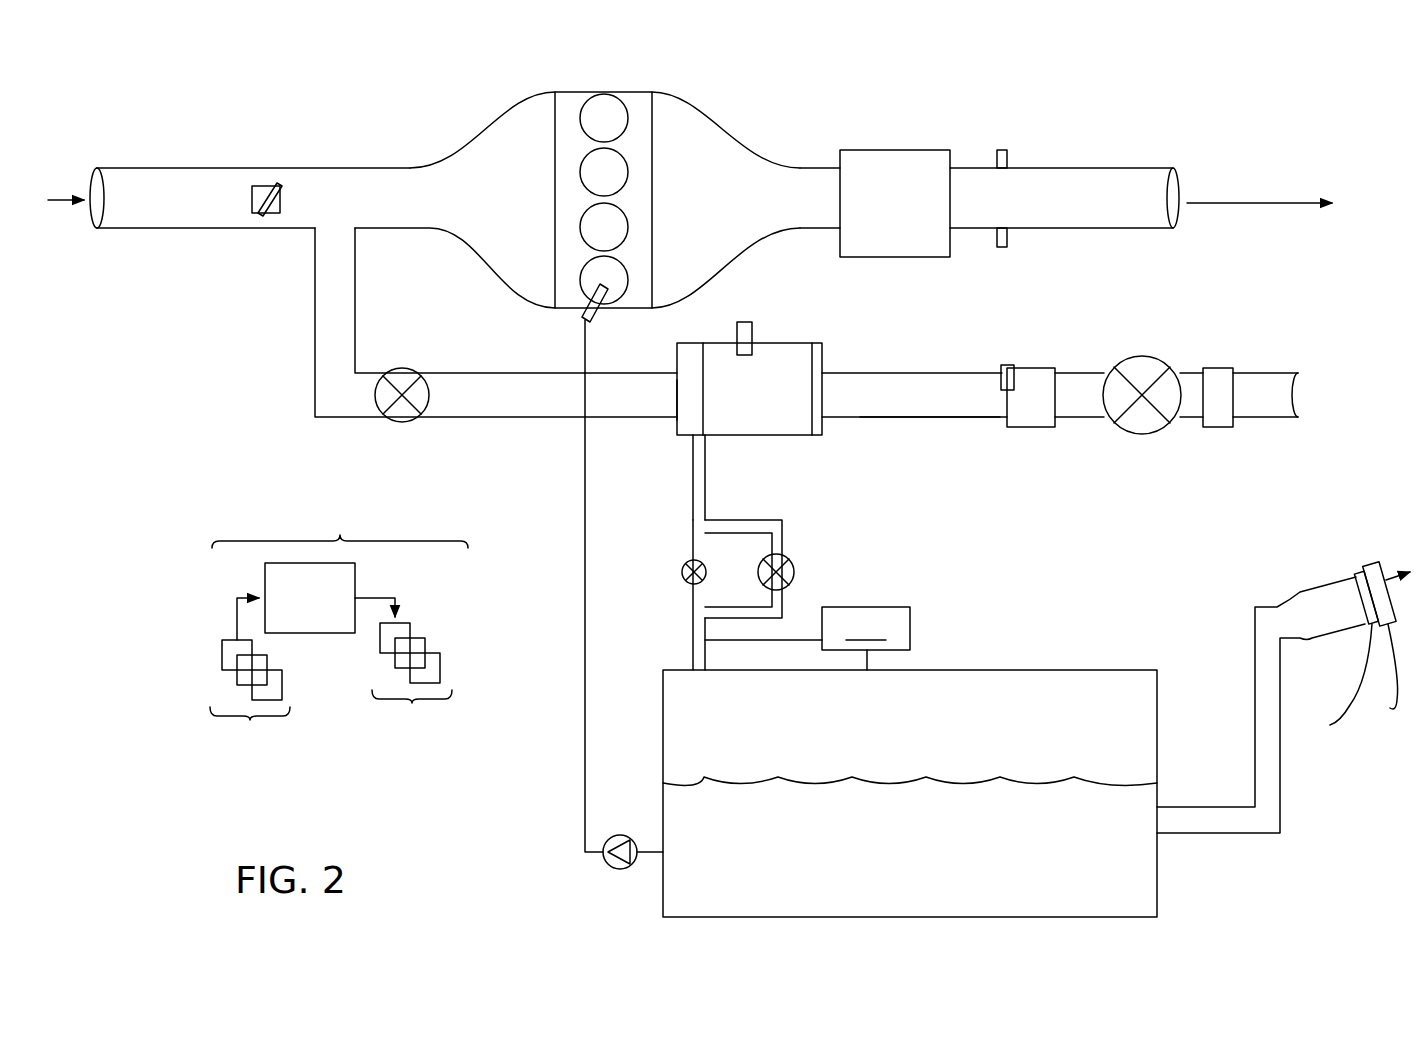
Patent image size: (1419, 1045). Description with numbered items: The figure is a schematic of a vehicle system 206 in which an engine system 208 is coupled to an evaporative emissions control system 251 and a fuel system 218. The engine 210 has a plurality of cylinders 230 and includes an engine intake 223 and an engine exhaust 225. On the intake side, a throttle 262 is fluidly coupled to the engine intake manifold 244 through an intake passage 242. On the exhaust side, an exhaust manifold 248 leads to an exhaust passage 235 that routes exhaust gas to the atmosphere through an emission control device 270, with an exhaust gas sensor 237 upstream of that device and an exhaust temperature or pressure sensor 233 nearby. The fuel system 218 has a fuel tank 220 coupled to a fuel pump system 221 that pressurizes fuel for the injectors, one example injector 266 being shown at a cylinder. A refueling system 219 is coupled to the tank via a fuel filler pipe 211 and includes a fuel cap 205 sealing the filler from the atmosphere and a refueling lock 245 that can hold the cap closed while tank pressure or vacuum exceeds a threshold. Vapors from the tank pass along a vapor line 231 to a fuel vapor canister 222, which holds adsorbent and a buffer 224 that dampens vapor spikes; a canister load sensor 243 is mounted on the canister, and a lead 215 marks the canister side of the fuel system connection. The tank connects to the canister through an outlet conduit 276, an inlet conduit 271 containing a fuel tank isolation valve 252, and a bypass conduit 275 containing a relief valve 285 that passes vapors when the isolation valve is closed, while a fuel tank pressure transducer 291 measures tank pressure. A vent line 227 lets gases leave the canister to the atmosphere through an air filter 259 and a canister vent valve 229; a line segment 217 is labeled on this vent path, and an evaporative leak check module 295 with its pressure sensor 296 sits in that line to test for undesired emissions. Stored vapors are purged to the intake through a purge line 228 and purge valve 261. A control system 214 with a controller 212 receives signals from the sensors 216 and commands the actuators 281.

The fuel cap 205 is at (1382, 643).
The vehicle system 206 is at (125, 103).
The engine system 208 is at (1055, 115).
The engine 210 is at (652, 178).
The fuel filler pipe 211 is at (1280, 722).
The controller 212 is at (310, 598).
The control system 214 is at (340, 518).
The fuel system 215 is at (677, 397).
The sensors 216 is at (250, 684).
The vent line 217 is at (912, 420).
The fuel system 218 is at (1212, 876).
The refueling system 219 is at (1290, 578).
The fuel tank 220 is at (1157, 780).
The fuel pump system 221 is at (618, 838).
The fuel vapor canister 222 is at (822, 345).
The engine intake 223 is at (475, 116).
The buffer 224 is at (696, 355).
The engine exhaust 225 is at (836, 98).
The vent line 227 is at (956, 406).
The purge line 228 is at (526, 406).
The canister vent valve 229 is at (1138, 357).
The cylinders 230 is at (621, 129).
The vapor line 231 is at (658, 542).
The exhaust temperature or pressure sensor 233 is at (996, 240).
The exhaust passage 235 is at (1120, 168).
The exhaust gas sensor 237 is at (996, 160).
The intake passage 242 is at (300, 232).
The canister load sensor 243 is at (748, 322).
The engine intake manifold 244 is at (516, 209).
The refueling lock 245 is at (1337, 683).
The exhaust manifold 248 is at (745, 209).
The evaporative emissions control system 251 is at (1204, 330).
The fuel tank isolation valve 252 is at (684, 578).
The air filter 259 is at (1216, 368).
The purge valve 261 is at (400, 370).
The throttle 262 is at (280, 211).
The fuel injector 266 is at (592, 314).
The emission control device 270 is at (880, 150).
The inlet conduit 271 is at (690, 622).
The bypass conduit 275 is at (785, 520).
The outlet conduit 276 is at (693, 486).
The actuators 281 is at (406, 676).
The relief valve 285 is at (792, 565).
The fuel tank pressure transducer 291 is at (910, 607).
The evaporative leak check module 295 is at (1028, 368).
The ELCM pressure sensor 296 is at (1004, 365).